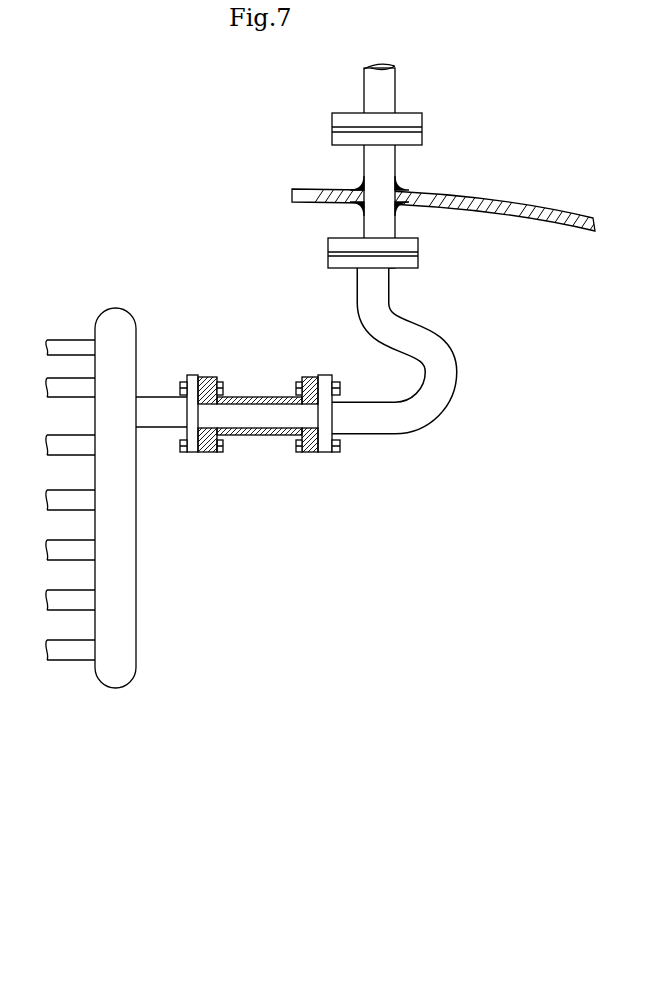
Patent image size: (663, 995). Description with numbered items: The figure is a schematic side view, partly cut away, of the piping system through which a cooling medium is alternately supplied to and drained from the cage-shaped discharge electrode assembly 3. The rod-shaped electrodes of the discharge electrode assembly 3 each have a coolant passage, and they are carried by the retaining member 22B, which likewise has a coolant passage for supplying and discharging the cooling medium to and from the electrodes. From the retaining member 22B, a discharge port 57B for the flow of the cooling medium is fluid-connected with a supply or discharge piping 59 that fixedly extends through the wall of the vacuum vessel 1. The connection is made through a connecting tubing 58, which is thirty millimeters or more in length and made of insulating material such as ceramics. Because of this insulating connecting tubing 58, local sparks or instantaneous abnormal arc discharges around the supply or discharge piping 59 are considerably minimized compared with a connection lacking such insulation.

The vacuum vessel 1 is at (563, 212).
The cage-shaped discharge electrode assembly 3 is at (72, 338).
The retaining member 22B is at (118, 315).
The discharge port 57B is at (205, 408).
The connecting tubing 58 is at (267, 395).
The supply or discharge piping 59 is at (385, 92).